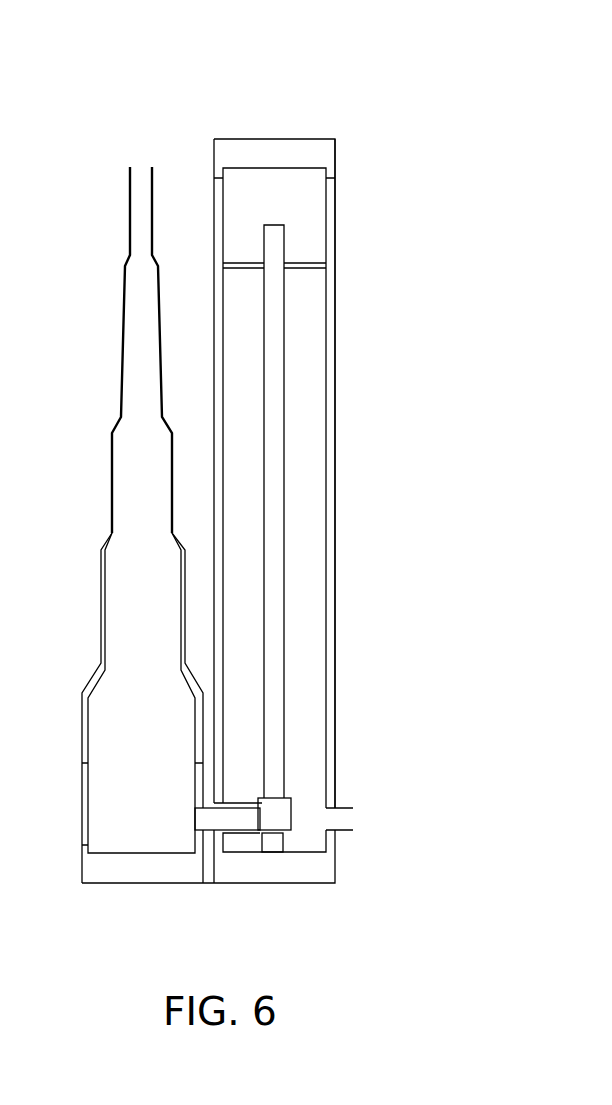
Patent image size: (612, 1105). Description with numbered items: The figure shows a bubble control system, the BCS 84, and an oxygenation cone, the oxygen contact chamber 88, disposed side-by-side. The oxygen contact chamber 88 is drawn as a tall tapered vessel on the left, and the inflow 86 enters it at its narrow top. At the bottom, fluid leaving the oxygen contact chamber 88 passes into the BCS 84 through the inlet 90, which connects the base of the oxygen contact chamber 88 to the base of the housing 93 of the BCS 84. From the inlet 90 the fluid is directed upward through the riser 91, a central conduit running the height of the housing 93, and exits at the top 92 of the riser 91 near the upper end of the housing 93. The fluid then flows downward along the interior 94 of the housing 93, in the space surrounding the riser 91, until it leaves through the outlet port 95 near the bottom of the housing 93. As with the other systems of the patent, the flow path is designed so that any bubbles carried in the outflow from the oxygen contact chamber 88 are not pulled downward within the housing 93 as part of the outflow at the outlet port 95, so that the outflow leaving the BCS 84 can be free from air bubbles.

The BCS 84 is at (408, 136).
The inflow 86 is at (137, 148).
The oxygen contact chamber 88 is at (124, 298).
The inlet 90 is at (226, 815).
The riser 91 is at (285, 595).
The top of the riser 92 is at (272, 230).
The housing 93 is at (336, 361).
The interior of the housing 94 is at (308, 457).
The outlet port 95 is at (356, 806).